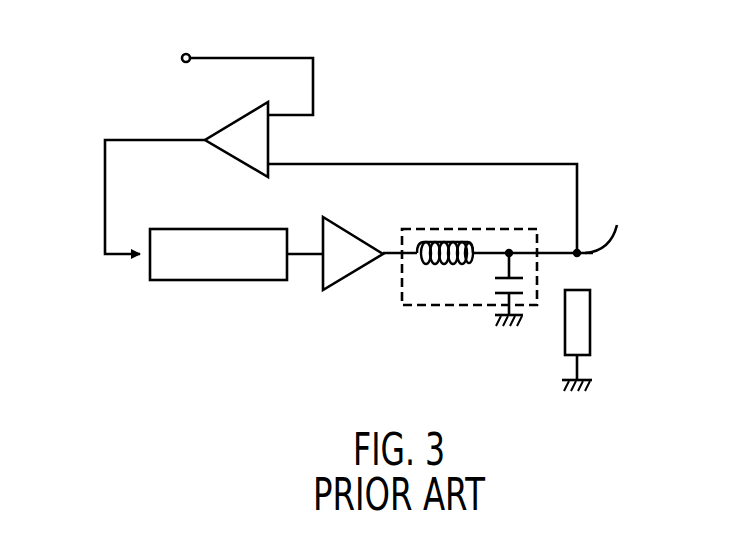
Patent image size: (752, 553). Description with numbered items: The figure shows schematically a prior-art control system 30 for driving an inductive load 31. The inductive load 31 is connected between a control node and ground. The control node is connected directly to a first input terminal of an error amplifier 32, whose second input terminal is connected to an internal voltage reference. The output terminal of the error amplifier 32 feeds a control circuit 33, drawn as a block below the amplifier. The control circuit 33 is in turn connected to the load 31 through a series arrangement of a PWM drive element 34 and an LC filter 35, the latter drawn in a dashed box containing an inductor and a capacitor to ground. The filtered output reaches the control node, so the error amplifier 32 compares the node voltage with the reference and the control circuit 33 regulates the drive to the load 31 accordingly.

The control system 30 is at (100, 90).
The inductive load 31 is at (580, 323).
The error amplifier 32 is at (245, 147).
The control circuit 33 is at (218, 272).
The PWM drive element 34 is at (345, 263).
The LC filter 35 is at (483, 240).